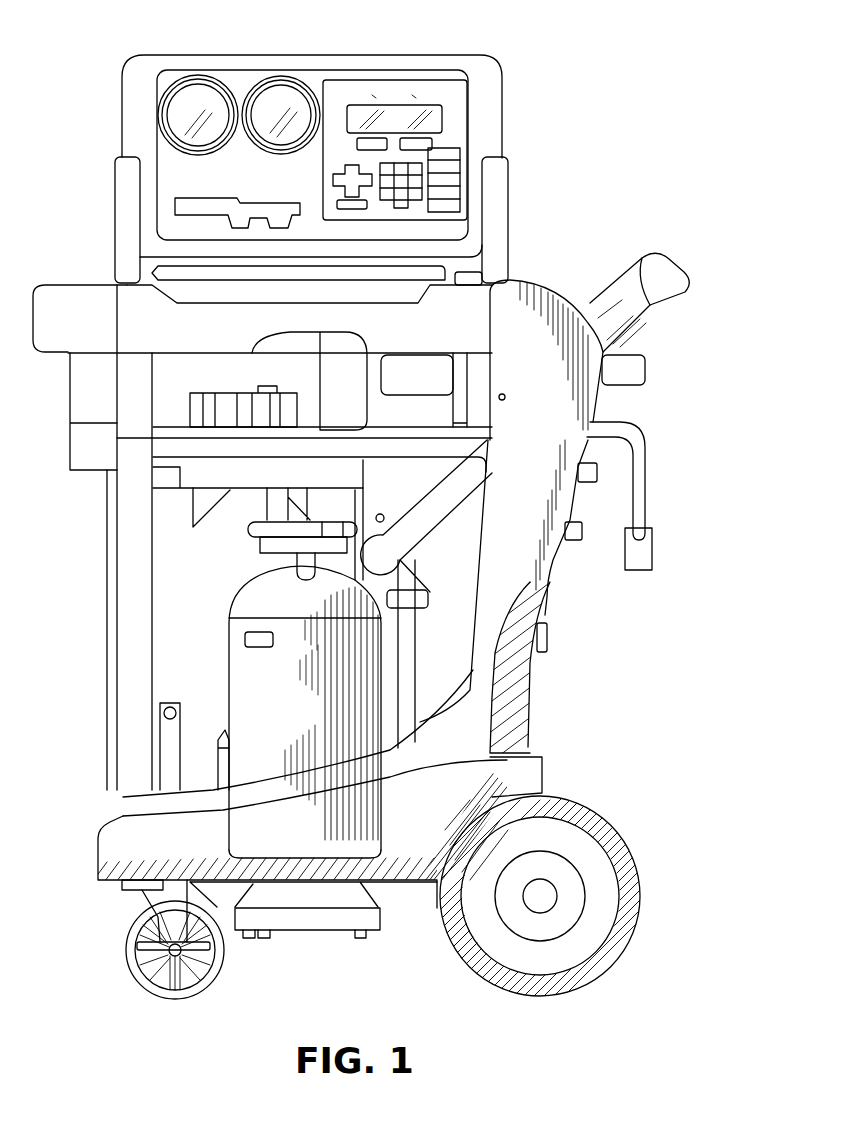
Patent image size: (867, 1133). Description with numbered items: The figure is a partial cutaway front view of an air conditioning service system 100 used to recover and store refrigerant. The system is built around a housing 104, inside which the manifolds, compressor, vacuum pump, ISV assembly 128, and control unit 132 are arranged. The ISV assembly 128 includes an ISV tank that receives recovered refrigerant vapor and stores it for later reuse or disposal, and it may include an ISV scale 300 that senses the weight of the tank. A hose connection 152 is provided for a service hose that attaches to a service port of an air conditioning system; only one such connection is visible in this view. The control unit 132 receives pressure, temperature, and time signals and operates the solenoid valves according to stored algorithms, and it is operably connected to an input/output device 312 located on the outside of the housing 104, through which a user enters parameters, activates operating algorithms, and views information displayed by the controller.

The air conditioning service system 100 is at (565, 117).
The housing 104 is at (540, 283).
The ISV assembly 128 is at (197, 748).
The control unit 132 is at (153, 145).
The hose connection 152 is at (652, 540).
The ISV scale 300 is at (302, 895).
The input/output device 312 is at (345, 80).